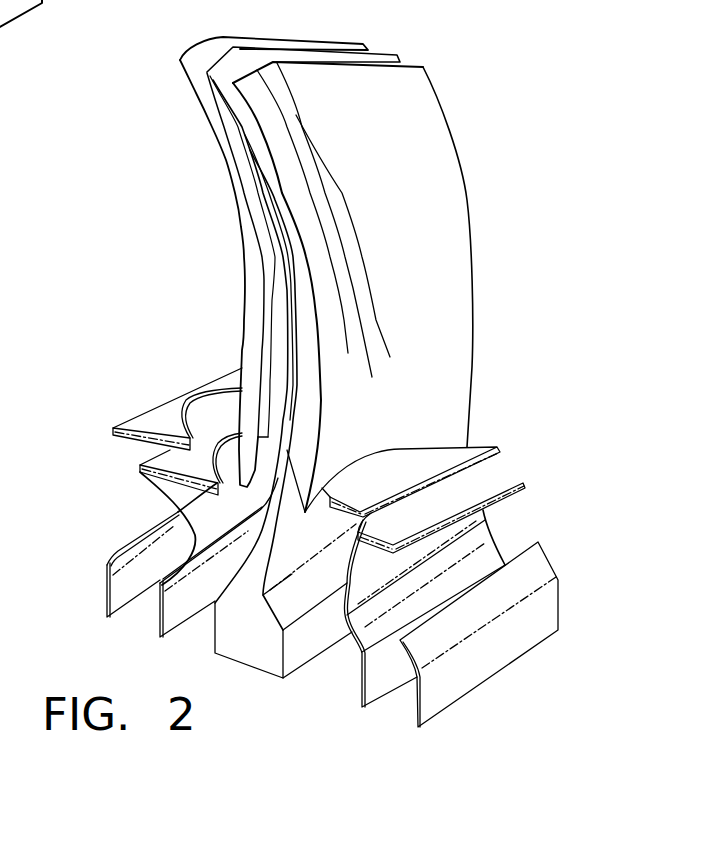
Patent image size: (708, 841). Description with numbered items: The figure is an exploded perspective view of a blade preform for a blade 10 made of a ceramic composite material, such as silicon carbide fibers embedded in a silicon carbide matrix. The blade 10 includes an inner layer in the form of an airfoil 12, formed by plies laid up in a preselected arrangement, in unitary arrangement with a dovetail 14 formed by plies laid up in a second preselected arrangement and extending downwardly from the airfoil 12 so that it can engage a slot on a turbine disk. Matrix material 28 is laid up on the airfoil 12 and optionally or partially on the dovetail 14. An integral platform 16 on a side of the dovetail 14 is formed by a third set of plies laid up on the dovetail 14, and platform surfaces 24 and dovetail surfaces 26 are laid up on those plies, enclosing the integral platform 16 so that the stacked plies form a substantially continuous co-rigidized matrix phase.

The blade 10 is at (502, 163).
The airfoil 12 is at (236, 50).
The dovetail 14 is at (263, 648).
The integral platform 16 is at (168, 480).
The platform surfaces 24 is at (160, 413).
The dovetail surfaces 26 is at (106, 580).
The matrix material 28 is at (428, 251).